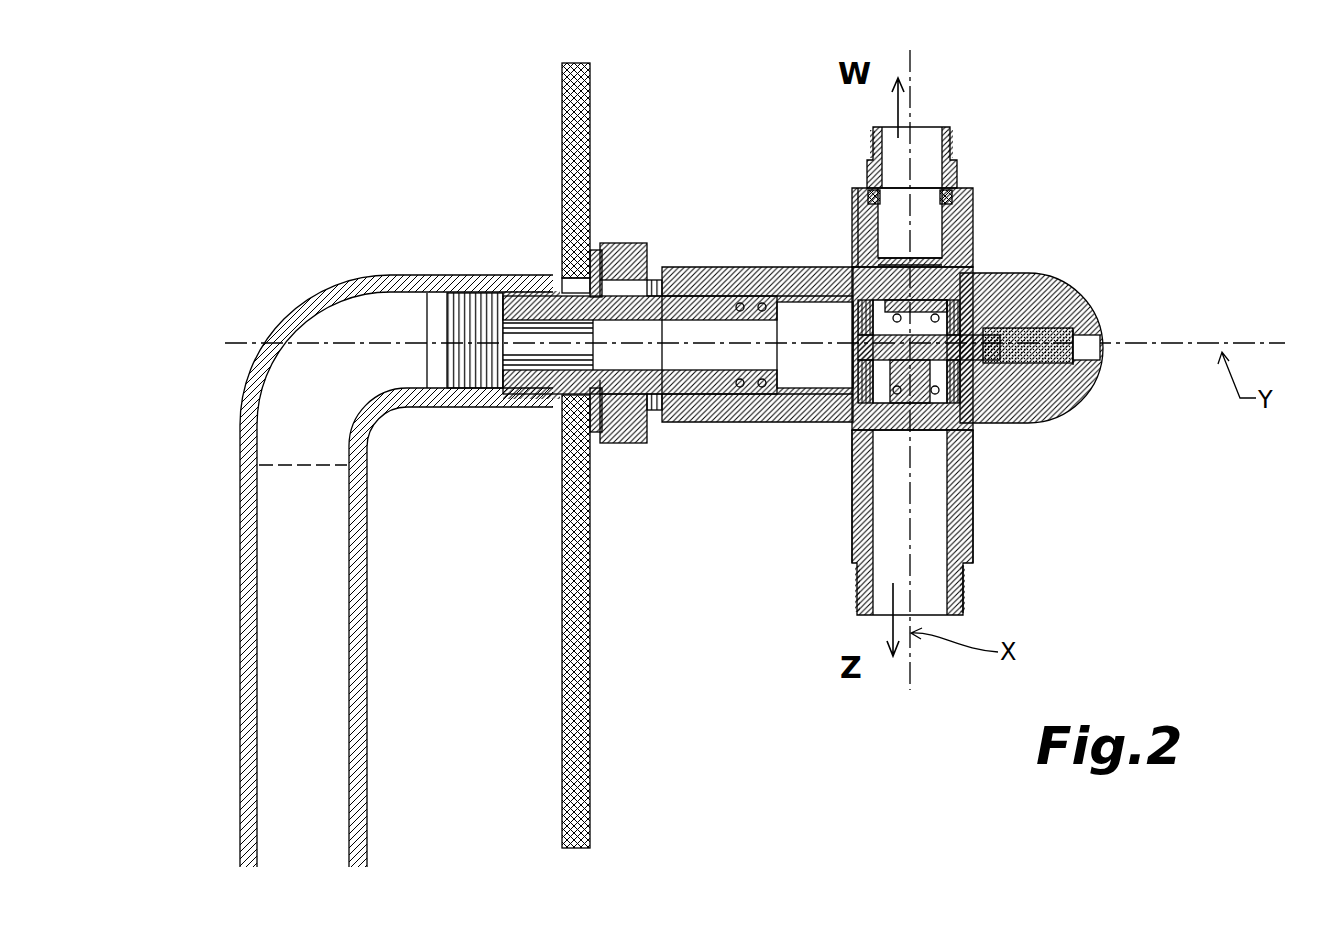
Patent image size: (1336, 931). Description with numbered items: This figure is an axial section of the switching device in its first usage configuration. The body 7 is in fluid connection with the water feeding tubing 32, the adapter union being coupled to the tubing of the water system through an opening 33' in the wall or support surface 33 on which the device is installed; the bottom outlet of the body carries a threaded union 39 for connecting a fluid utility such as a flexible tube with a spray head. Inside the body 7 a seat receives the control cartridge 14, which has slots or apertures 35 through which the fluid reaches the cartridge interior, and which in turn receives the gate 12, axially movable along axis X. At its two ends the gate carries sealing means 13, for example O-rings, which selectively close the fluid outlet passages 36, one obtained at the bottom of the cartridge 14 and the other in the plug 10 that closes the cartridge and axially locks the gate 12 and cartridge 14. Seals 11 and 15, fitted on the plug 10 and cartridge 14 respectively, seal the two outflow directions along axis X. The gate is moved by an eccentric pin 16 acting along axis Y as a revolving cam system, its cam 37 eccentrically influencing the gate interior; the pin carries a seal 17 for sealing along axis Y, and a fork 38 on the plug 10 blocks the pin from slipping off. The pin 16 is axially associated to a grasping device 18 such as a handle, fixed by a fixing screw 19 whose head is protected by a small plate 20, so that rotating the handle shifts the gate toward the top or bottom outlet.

The body 7 is at (745, 410).
The plug 10 is at (973, 263).
The seal 11 is at (1013, 267).
The gate 12 is at (972, 443).
The sealing means 13 is at (880, 400).
The control cartridge 14 is at (835, 270).
The seal 15 is at (1007, 423).
The eccentric pin 16 is at (957, 360).
The seal 17 is at (1070, 282).
The grasping device 18 is at (1083, 377).
The fixing screw 19 is at (1100, 332).
The small plate 20 is at (1103, 355).
The water feeding tubing 32 is at (243, 582).
The surface 33 is at (610, 455).
The opening 33' is at (556, 378).
The slots or apertures 35 is at (790, 270).
The fluid outlet passages 36 is at (853, 223).
The cam 37 is at (907, 258).
The fork 38 is at (985, 295).
The threaded union 39 is at (976, 597).